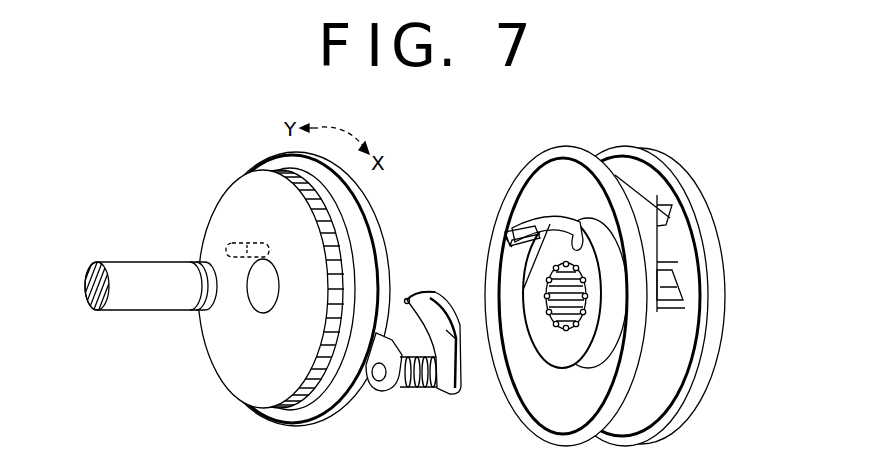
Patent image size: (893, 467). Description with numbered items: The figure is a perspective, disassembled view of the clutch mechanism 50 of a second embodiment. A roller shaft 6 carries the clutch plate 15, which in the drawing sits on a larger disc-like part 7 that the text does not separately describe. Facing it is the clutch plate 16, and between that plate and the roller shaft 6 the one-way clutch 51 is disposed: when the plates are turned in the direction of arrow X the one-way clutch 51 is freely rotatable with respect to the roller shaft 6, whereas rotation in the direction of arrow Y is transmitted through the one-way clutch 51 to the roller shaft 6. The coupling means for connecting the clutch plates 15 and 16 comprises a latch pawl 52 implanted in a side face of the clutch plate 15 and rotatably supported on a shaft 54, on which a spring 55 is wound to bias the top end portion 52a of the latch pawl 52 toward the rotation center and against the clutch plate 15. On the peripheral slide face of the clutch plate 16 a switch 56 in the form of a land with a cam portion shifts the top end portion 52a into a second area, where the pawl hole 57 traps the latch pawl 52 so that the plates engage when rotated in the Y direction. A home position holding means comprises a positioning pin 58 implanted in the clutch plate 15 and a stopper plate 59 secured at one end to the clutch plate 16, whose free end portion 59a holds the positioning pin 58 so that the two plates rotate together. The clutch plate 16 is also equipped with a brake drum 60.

The roller shaft 6 is at (137, 270).
The gear disc 7 is at (243, 387).
The clutch plate 15 is at (283, 158).
The clutch plate 16 is at (598, 155).
The clutch mechanism 50 is at (478, 116).
The one-way clutch 51 is at (556, 325).
The latch pawl 52 is at (461, 378).
The top end portion 52a is at (424, 297).
The shaft 54 is at (375, 380).
The spring 55 is at (413, 388).
The switch 56 is at (664, 249).
The pawl hole 57 is at (678, 282).
The positioning pin 58 is at (246, 243).
The stopper plate 59 is at (553, 216).
The free end portion 59a is at (506, 236).
The brake drum 60 is at (690, 182).